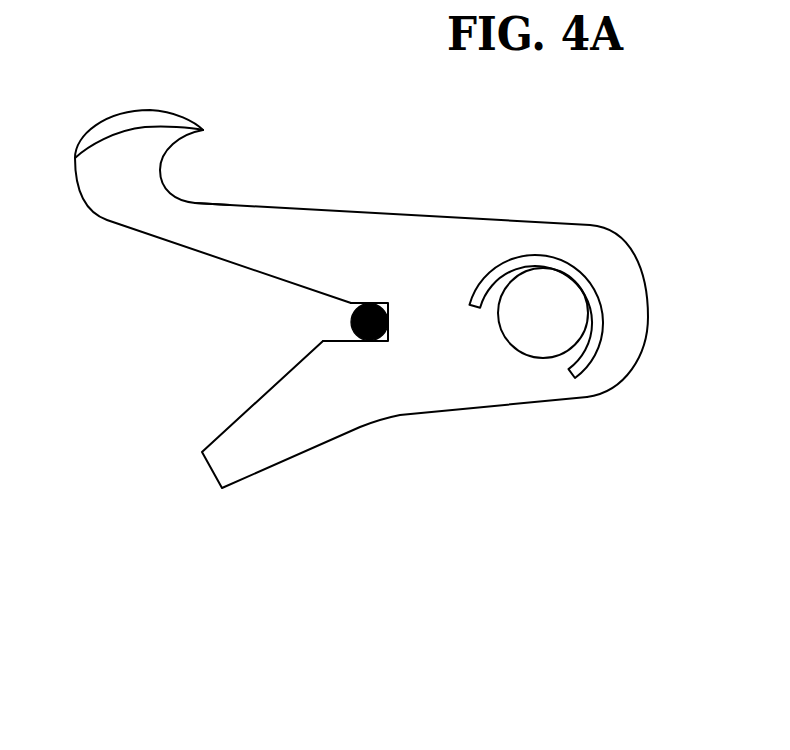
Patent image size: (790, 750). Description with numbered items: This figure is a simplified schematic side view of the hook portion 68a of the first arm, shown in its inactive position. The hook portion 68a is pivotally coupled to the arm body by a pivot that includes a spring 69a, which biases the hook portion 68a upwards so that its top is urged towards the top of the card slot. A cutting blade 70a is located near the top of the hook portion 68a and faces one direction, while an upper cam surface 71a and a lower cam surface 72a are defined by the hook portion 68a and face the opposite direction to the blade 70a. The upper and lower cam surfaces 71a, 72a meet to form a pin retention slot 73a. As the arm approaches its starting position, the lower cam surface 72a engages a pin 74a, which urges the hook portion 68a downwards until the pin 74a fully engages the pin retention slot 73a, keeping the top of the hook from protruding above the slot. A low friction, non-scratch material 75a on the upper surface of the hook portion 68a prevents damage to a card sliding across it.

The hook portion 68a is at (516, 455).
The spring 69a is at (583, 270).
The cutting blade 70a is at (162, 173).
The upper cam surface 71a is at (187, 246).
The lower cam surface 72a is at (243, 414).
The pin retention slot 73a is at (388, 307).
The pin 74a is at (352, 322).
The low friction, non-scratch material 75a is at (125, 121).